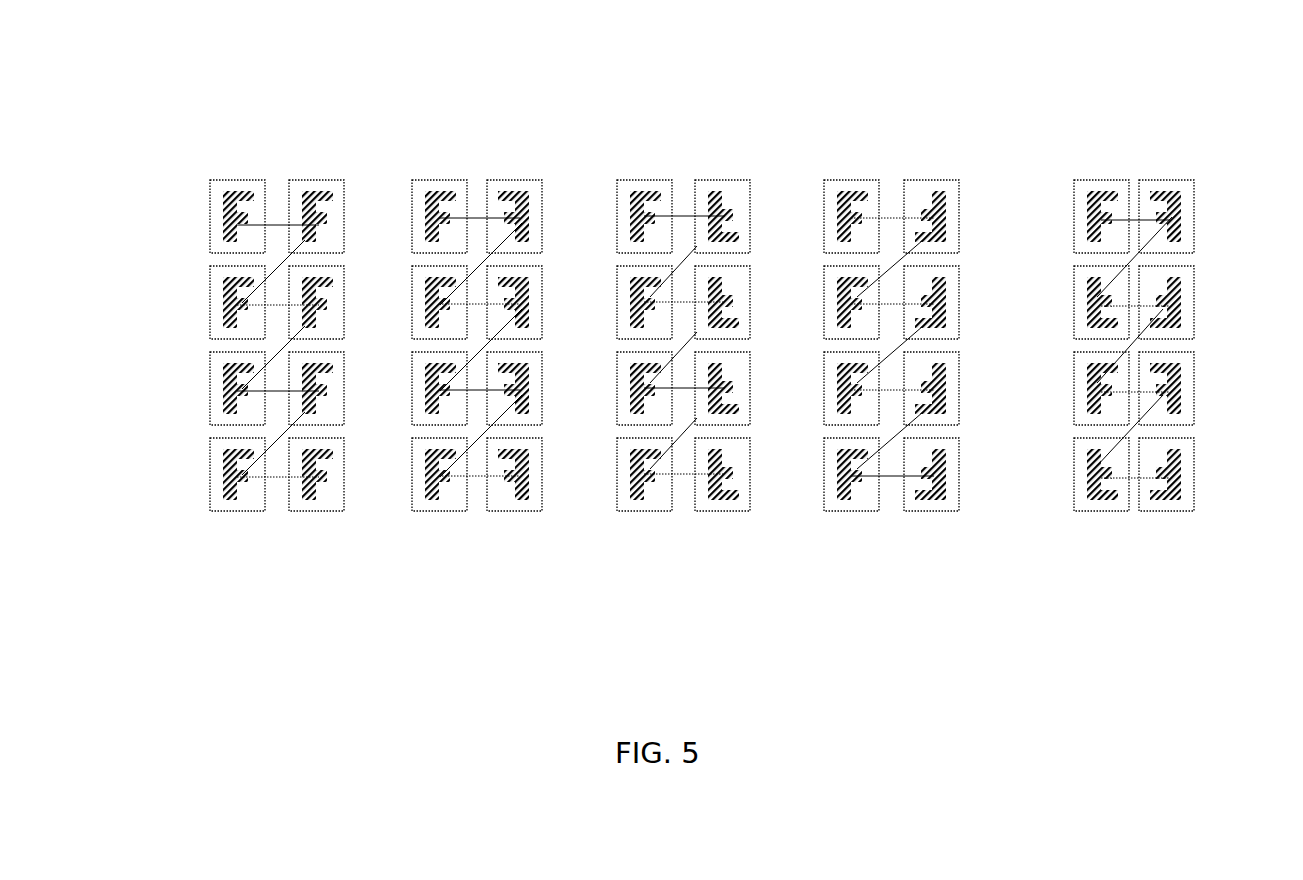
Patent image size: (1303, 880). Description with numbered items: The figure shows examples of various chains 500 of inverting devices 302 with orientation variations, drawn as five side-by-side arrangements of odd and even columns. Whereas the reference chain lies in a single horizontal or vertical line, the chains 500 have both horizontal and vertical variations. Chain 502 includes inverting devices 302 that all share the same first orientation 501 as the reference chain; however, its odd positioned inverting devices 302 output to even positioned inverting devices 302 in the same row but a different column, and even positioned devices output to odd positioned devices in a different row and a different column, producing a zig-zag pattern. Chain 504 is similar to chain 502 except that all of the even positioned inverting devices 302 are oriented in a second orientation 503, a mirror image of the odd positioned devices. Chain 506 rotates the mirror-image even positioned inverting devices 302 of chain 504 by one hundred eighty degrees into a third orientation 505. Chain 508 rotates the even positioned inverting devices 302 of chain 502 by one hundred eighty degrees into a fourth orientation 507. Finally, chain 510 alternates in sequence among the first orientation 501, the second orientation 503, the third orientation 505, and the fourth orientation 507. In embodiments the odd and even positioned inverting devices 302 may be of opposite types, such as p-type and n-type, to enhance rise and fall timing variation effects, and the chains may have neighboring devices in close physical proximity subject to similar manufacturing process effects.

The chains 500 is at (680, 36).
The inverting device 302 is at (210, 180).
The first orientation 501 is at (200, 475).
The chain 502 is at (278, 552).
The second orientation 503 is at (525, 512).
The chain 504 is at (472, 552).
The third orientation 505 is at (737, 517).
The chain 506 is at (682, 555).
The fourth orientation 507 is at (938, 518).
The chain 508 is at (897, 550).
The chain 510 is at (1135, 552).